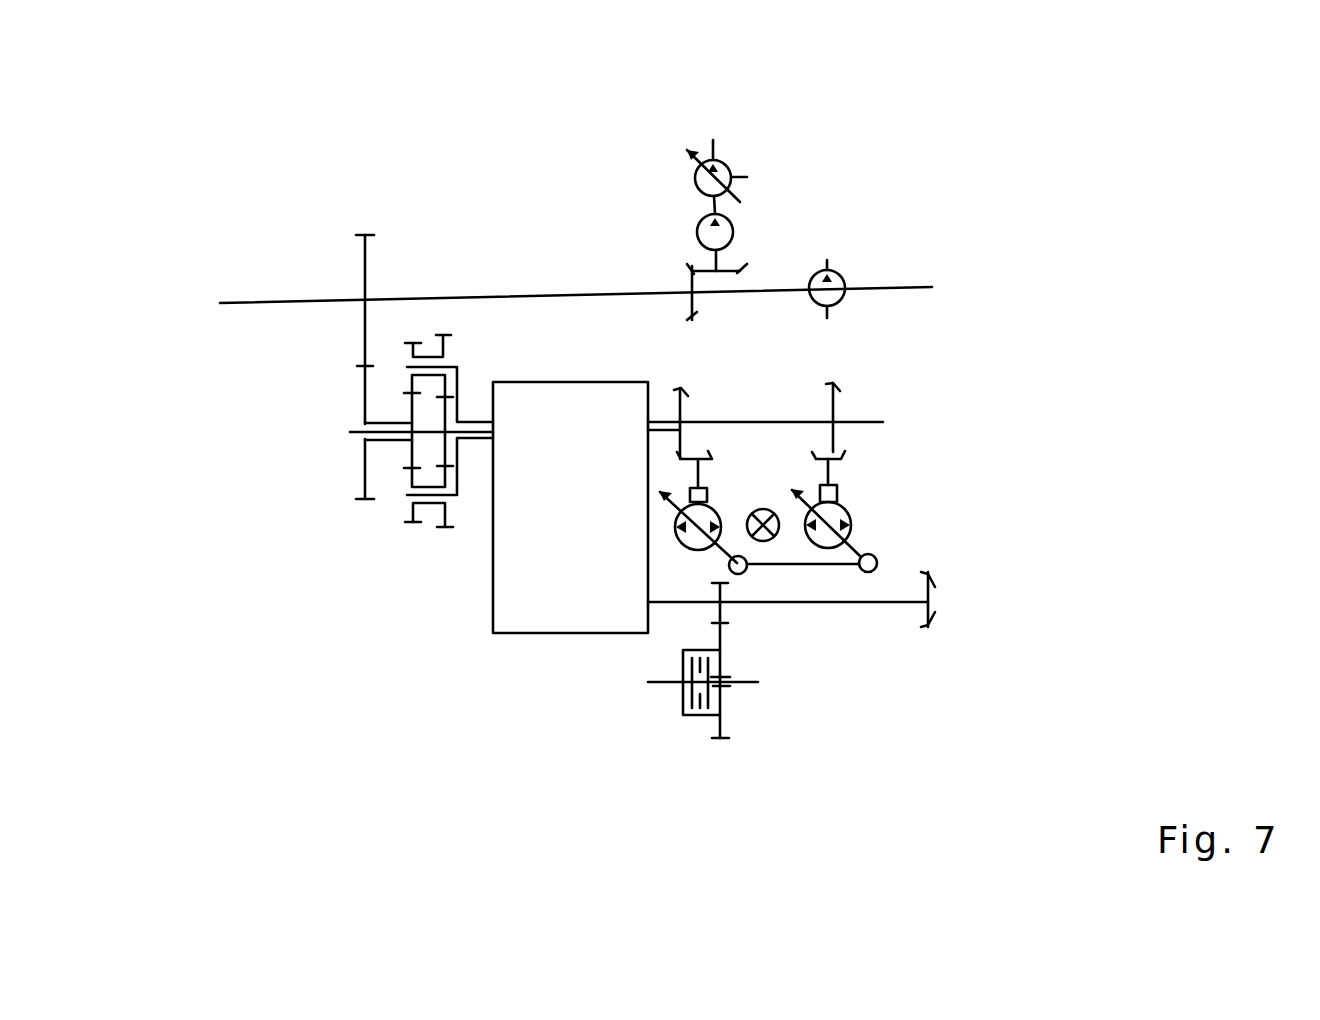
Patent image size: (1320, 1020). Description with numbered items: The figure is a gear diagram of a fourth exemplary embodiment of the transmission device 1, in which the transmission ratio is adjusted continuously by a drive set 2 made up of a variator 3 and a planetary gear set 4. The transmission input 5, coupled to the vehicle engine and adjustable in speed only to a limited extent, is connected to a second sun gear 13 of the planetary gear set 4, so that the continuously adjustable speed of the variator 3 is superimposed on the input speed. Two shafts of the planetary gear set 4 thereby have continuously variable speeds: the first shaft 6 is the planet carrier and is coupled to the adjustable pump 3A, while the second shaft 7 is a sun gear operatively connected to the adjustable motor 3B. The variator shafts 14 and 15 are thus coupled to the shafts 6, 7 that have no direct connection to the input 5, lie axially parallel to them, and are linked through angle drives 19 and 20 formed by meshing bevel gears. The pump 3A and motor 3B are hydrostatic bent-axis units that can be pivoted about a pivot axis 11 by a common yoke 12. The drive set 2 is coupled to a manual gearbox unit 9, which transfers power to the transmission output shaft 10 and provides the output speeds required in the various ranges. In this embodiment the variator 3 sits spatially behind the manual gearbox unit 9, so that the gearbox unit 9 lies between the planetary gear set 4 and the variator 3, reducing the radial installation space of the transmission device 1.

The transmission device 1 is at (287, 267).
The drive set 2 is at (873, 467).
The variator 3 is at (900, 433).
The adjustable pump 3A is at (695, 543).
The adjustable motor 3B is at (830, 543).
The planetary gear set 4 is at (423, 532).
The transmission input 5 is at (353, 298).
The first shaft 6 is at (462, 392).
The second shaft 7 is at (443, 438).
The manual gearbox unit 9 is at (517, 638).
The transmission output shaft 10 is at (905, 603).
The pivot axis 11 is at (765, 533).
The yoke 12 is at (812, 567).
The second sun gear 13 is at (408, 408).
The variator shaft 14 is at (695, 467).
The variator shaft 15 is at (830, 473).
The angle drive 19 is at (670, 367).
The angle drive 20 is at (857, 390).